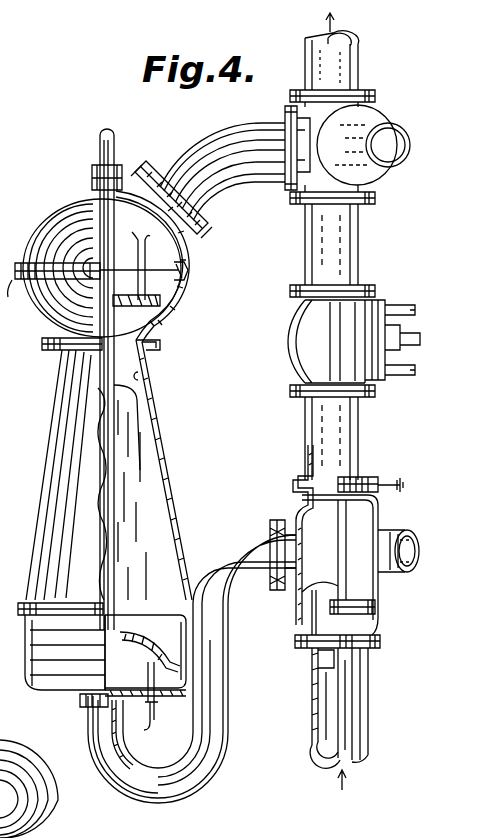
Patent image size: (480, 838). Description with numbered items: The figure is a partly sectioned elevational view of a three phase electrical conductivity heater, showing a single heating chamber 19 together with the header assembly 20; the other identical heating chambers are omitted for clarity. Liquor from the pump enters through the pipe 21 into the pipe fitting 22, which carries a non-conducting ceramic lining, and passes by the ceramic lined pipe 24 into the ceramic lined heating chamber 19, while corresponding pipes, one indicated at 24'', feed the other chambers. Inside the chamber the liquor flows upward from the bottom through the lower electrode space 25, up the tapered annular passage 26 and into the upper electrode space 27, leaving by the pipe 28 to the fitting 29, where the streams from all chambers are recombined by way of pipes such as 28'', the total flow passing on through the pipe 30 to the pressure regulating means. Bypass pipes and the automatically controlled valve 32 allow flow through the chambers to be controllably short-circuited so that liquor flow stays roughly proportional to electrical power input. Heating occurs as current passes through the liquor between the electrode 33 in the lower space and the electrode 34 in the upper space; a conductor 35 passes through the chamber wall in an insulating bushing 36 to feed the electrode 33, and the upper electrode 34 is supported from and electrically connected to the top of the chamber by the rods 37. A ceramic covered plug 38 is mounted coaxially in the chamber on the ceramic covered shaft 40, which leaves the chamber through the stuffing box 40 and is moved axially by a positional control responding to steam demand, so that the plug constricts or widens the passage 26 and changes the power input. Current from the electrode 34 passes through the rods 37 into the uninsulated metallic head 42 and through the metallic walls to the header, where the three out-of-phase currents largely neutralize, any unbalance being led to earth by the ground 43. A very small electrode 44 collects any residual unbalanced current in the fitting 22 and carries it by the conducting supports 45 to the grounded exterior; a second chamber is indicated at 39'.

The heating chamber 19 is at (70, 402).
The header assembly 20 is at (308, 728).
The pipe 21 is at (344, 715).
The pipe fitting 22 is at (362, 612).
The ceramic lined pipe 24 is at (192, 669).
The pipe 24'' is at (398, 534).
The lower electrode space 25 is at (125, 660).
The annular passage 26 is at (152, 482).
The upper electrode space 27 is at (162, 340).
The pipe 28 is at (208, 173).
The pipe 28'' is at (364, 137).
The fitting 29 is at (290, 120).
The pipe 30 is at (346, 68).
The valve 32 is at (305, 340).
The electrode 33 is at (152, 660).
The electrode 34 is at (160, 328).
The conductor 35 is at (150, 724).
The insulating bushing 36 is at (156, 700).
The rods 37 is at (136, 258).
The plug 38 is at (125, 460).
The second spherical chamber 39' is at (37, 789).
The stuffing box 40 is at (118, 176).
The metallic head 42 is at (184, 244).
The ground 43 is at (390, 476).
The electrode 44 is at (340, 590).
The conducting supports 45 is at (298, 614).